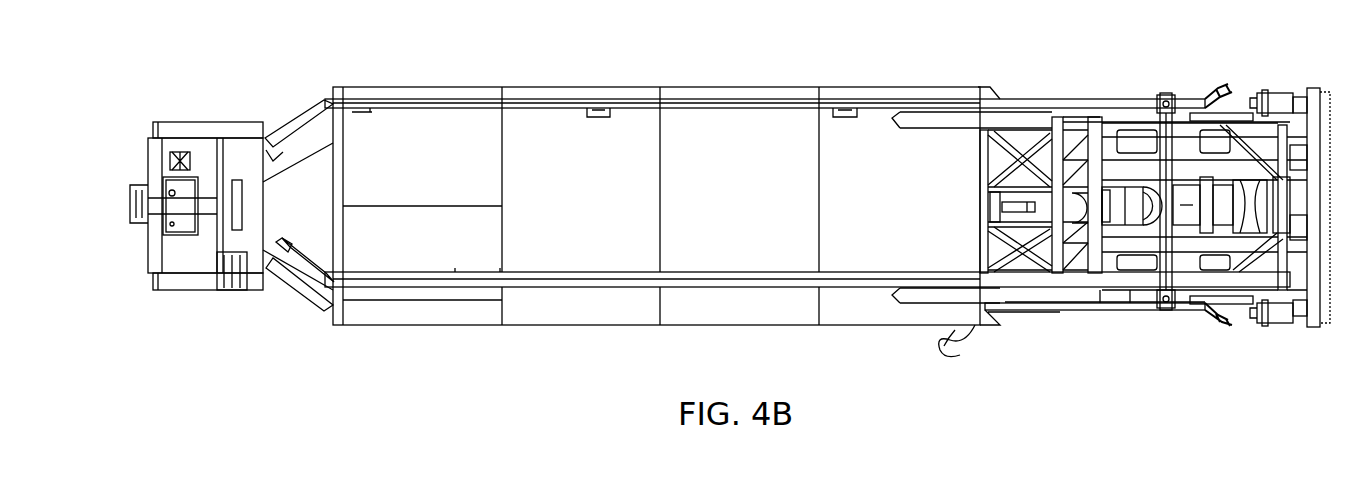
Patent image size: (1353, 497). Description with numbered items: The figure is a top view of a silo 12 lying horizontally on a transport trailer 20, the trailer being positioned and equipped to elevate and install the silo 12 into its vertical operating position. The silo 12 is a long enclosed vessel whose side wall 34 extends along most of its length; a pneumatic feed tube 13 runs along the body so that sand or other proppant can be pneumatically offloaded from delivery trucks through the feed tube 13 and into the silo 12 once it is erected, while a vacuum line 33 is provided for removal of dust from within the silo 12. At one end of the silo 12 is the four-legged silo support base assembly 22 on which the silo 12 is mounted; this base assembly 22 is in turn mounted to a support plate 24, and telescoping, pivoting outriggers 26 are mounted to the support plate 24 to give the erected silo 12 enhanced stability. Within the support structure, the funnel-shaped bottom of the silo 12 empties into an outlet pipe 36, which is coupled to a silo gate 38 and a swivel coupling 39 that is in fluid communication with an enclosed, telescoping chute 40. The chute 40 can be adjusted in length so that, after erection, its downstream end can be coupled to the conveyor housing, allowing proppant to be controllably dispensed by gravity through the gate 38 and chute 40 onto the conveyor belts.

The silo 12 is at (297, 72).
The pneumatic feed tube 13 is at (698, 104).
The transport trailer 20 is at (211, 133).
The silo support base assembly 22 is at (1018, 130).
The support plate 24 is at (1312, 322).
The outriggers 26 is at (1270, 92).
The vacuum line 33 is at (533, 288).
The side wall 34 is at (533, 150).
The outlet pipe 36 is at (1120, 192).
The silo gate 38 is at (1038, 215).
The swivel coupling 39 is at (1148, 192).
The telescoping chute 40 is at (1188, 192).